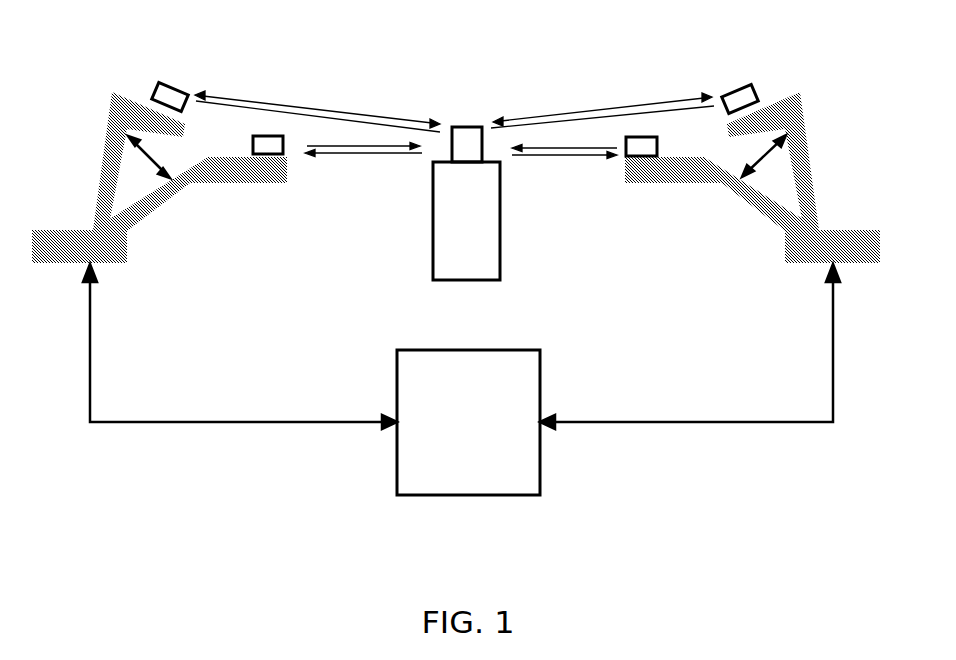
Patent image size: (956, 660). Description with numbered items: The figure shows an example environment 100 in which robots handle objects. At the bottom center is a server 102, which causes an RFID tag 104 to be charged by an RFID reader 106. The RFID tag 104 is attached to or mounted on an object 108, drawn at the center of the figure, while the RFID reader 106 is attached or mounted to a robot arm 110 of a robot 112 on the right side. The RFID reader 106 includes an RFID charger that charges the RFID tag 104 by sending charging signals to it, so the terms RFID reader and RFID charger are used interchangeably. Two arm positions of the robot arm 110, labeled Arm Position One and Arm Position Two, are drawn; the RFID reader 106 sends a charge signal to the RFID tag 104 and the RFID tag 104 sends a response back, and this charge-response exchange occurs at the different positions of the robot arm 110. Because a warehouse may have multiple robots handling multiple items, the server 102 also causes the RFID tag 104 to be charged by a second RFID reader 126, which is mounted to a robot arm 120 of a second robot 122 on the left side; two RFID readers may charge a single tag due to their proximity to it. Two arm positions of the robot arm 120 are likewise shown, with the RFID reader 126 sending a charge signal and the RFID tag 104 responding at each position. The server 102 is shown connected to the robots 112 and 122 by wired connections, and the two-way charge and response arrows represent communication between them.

The environment 100 is at (448, 566).
The server 102 is at (493, 350).
The RFID tag 104 is at (483, 126).
The RFID reader 106 is at (742, 88).
The object 108 is at (433, 256).
The robot arm 110 is at (808, 133).
The robot 112 is at (870, 229).
The robot arm 120 is at (110, 112).
The robot 122 is at (77, 229).
The RFID reader 126 is at (171, 88).